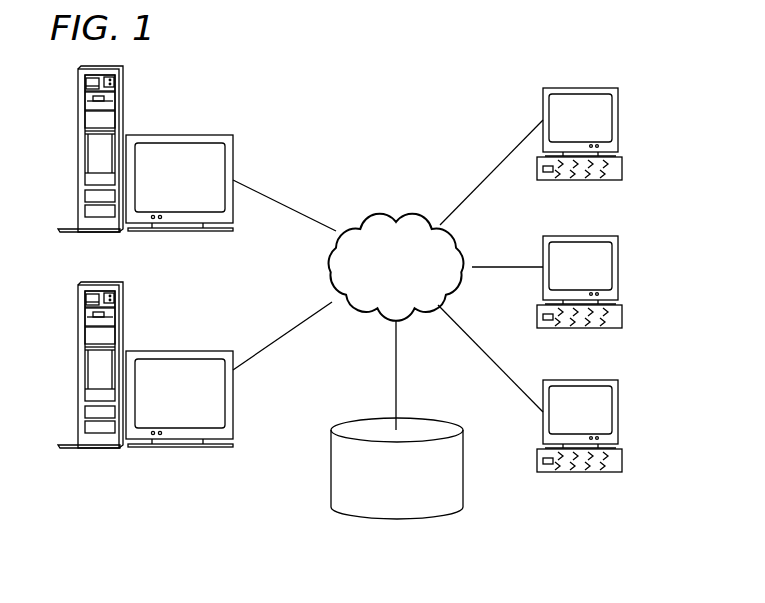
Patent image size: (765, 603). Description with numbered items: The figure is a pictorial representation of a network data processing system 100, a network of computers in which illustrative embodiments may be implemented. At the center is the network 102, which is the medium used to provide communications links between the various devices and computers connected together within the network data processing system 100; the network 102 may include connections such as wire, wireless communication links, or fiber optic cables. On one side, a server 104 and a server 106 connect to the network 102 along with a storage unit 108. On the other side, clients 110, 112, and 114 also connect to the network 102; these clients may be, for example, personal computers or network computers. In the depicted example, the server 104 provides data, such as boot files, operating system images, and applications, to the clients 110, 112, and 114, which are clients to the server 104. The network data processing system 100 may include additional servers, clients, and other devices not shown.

The network data processing system 100 is at (447, 100).
The network 102 is at (368, 218).
The server 104 is at (79, 150).
The server 106 is at (79, 370).
The storage unit 108 is at (378, 517).
The client 110 is at (619, 118).
The client 112 is at (619, 267).
The client 114 is at (619, 410).